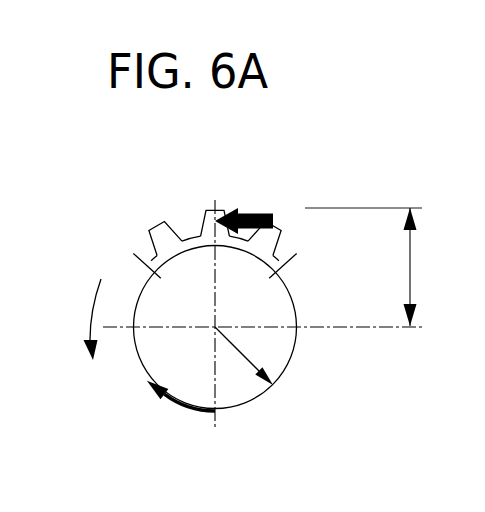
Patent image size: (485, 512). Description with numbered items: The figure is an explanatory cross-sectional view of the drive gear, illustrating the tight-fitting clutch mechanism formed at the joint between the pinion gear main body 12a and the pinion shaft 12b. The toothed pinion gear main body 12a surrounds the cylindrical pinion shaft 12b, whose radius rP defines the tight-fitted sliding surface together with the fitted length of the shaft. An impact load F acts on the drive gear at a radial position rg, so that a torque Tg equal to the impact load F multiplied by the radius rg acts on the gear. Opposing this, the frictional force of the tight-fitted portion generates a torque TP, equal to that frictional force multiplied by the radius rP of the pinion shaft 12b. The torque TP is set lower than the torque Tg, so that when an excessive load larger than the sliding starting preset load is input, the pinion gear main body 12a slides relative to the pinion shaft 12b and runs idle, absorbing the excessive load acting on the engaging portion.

The pinion gear main body 12a is at (172, 232).
The pinion shaft 12b is at (249, 406).
The impact load F is at (244, 205).
The radial position of impact load rg is at (376, 267).
The radius of pinion shaft rP is at (246, 356).
The torque due to impact load Tg is at (74, 319).
The torque generated from frictional force TP is at (181, 411).